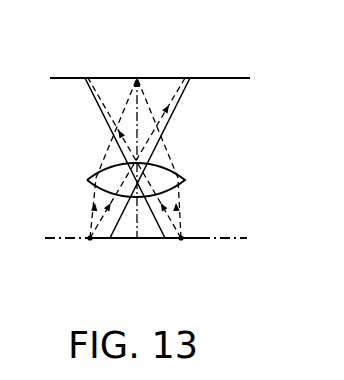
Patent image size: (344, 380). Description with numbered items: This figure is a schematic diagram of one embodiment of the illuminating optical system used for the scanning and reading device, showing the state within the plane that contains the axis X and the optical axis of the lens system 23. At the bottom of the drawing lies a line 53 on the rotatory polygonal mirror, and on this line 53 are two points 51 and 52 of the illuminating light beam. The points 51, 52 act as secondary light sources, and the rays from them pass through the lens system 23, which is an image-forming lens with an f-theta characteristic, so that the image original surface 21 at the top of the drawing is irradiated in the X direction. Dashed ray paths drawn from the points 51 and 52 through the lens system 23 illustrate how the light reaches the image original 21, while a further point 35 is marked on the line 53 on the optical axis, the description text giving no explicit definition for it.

The image original surface 21 is at (225, 78).
The lens system 23 is at (177, 170).
The on-axis object point 35 is at (123, 240).
The point in the illuminating light beam 51 is at (182, 240).
The point in the illuminating light beam 52 is at (90, 240).
The line on the rotatory polygonal mirror 53 is at (230, 238).